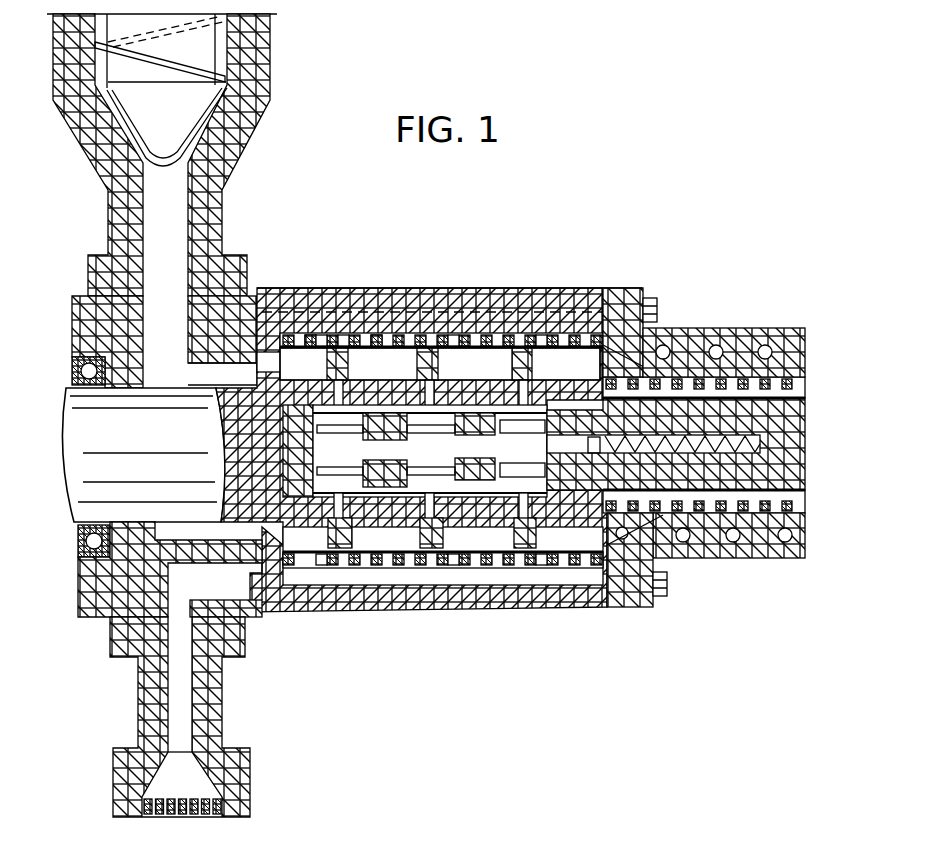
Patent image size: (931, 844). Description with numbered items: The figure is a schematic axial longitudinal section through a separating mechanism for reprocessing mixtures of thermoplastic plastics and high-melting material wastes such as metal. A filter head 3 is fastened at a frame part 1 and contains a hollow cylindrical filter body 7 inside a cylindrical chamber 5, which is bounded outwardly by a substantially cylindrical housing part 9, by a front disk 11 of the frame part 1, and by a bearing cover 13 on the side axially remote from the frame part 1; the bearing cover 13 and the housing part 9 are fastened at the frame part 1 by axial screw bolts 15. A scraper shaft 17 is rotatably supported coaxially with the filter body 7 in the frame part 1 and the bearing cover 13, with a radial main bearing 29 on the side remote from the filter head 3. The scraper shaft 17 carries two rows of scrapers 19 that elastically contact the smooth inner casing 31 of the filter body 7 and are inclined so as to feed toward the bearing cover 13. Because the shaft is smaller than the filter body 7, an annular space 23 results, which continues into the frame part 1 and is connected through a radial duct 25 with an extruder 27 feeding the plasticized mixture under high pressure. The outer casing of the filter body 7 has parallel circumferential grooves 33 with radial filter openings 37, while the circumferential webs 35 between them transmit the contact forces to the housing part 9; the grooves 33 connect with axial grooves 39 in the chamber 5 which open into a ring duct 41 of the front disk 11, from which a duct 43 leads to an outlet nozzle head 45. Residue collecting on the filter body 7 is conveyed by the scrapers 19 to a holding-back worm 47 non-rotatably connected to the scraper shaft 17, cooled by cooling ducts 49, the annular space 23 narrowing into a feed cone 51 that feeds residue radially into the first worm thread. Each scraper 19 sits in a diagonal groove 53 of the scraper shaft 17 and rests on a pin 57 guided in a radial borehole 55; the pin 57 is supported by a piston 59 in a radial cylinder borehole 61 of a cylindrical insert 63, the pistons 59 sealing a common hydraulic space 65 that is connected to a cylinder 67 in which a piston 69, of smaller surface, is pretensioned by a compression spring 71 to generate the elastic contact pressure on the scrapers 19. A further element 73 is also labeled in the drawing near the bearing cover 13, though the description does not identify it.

The frame part 1 is at (245, 289).
The filter head 3 is at (441, 262).
The cylindrical chamber 5 is at (506, 300).
The filter body 7 is at (557, 300).
The housing part 9 is at (360, 289).
The front disk 11 is at (273, 289).
The bearing cover 13 is at (652, 300).
The axial screw bolts 15 is at (660, 306).
The scraper shaft 17 is at (408, 568).
The scrapers 19 is at (337, 300).
The annular space 23 is at (581, 300).
The duct 25 is at (158, 320).
The extruder 27 is at (205, 50).
The radial main bearing 29 is at (80, 368).
The smooth inner casing 31 is at (485, 300).
The circumferential grooves 33 is at (402, 300).
The circumferential webs 35 is at (421, 300).
The radial filter openings 37 is at (386, 300).
The axial grooves 39 is at (317, 300).
The ring duct 41 is at (296, 289).
The duct 43 is at (240, 590).
The outlet nozzle head 45 is at (182, 817).
The holding-back worm 47 is at (739, 360).
The cooling ducts 49 is at (683, 541).
The feed cone 51 is at (622, 545).
The grooves 53 is at (376, 570).
The radial borehole 55 is at (355, 512).
The pin 57 is at (330, 568).
The piston 59 is at (327, 508).
The radial cylinder borehole 61 is at (288, 452).
The cylindrical insert 63 is at (743, 480).
The hydraulic space 65 is at (462, 492).
The cylinder 67 is at (566, 452).
The piston 69 is at (596, 454).
The compression spring 71 is at (657, 450).
The conical surface 73 is at (613, 300).